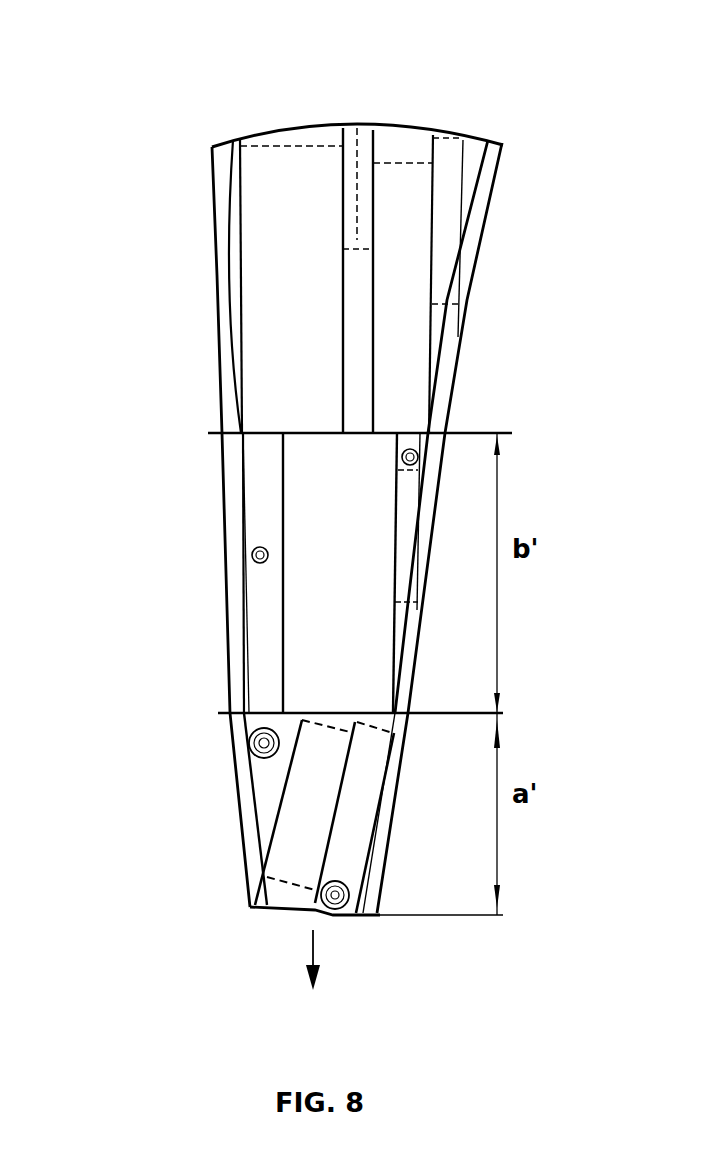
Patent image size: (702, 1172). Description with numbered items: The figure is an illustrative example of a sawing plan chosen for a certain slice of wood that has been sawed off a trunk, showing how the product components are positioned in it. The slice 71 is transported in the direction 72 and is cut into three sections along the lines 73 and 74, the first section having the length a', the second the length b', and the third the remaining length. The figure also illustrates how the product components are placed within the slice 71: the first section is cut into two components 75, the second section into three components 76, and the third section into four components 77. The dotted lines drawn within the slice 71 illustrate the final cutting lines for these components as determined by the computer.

The slice 71 is at (480, 250).
The direction 72 is at (313, 950).
The cutting line 73 is at (457, 714).
The cutting line 74 is at (482, 432).
The components 75 is at (337, 853).
The components 76 is at (403, 503).
The components 77 is at (450, 157).